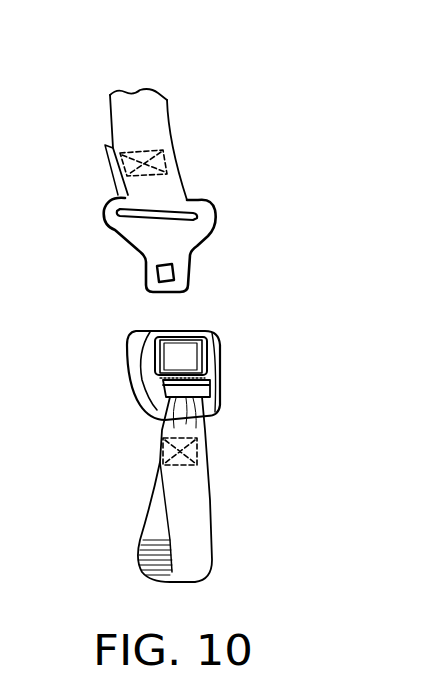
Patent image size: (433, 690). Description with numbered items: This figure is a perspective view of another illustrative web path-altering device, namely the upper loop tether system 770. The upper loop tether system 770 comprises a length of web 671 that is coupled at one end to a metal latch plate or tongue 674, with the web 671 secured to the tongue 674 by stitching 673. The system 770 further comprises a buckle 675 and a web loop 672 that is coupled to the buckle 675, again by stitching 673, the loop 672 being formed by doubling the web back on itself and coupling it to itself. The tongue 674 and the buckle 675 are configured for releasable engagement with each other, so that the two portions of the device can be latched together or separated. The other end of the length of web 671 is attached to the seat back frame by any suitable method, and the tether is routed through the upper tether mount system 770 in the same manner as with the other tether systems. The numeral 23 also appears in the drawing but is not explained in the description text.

The upper loop tether system 770 is at (167, 67).
The web 671 is at (152, 130).
The stitching 673 is at (163, 160).
The tongue 674 is at (195, 233).
The buckle assembly 23 is at (119, 314).
The buckle 675 is at (222, 373).
The web loop 672 is at (150, 547).